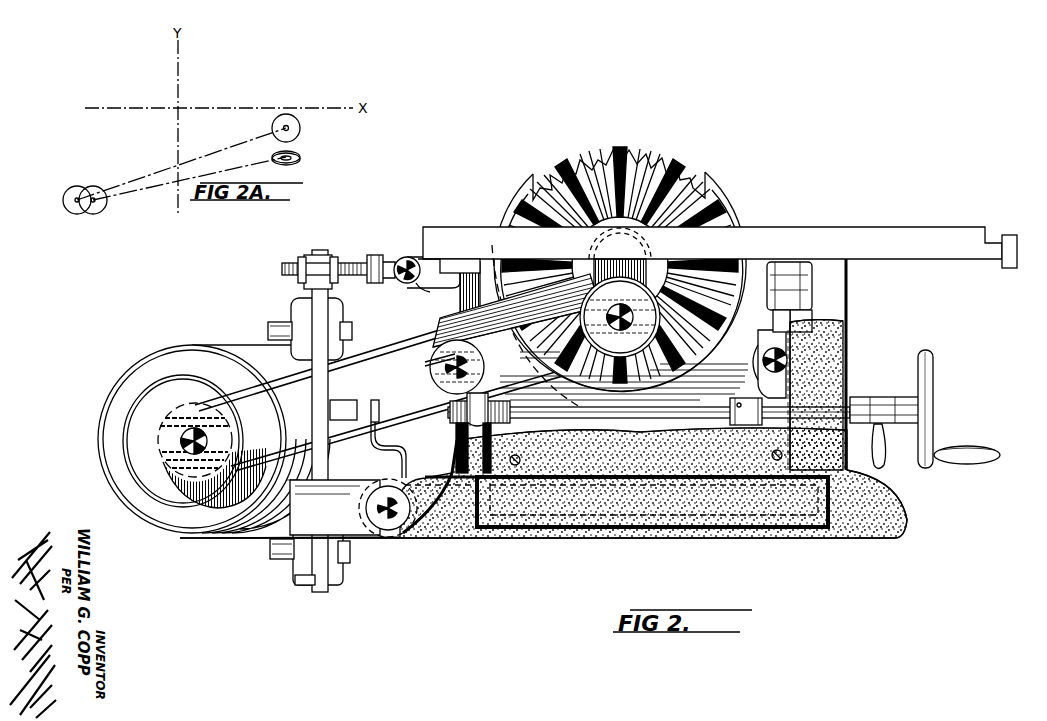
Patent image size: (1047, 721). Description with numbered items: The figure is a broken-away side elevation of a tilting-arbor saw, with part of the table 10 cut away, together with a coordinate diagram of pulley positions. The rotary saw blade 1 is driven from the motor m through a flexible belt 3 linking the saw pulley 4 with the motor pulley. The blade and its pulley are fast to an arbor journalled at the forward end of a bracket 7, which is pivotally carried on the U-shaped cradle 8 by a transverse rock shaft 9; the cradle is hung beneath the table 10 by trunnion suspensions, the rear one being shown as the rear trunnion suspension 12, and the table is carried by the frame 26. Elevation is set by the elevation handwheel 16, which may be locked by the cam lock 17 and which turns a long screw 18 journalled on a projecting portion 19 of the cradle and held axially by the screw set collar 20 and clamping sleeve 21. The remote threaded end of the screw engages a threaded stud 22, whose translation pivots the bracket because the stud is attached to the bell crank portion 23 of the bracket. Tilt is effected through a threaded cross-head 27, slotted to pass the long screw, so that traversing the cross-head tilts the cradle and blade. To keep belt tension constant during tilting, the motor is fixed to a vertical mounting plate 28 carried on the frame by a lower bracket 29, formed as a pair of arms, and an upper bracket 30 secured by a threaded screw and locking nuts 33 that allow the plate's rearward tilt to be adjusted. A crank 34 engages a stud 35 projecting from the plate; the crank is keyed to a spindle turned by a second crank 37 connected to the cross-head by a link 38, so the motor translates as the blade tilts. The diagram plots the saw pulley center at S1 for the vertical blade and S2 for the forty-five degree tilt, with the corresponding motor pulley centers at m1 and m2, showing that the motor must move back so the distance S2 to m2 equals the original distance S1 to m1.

In FIG. 2, the rotary saw blade 1 is at (632, 160).
In FIG. 2, the flexible belt 3 is at (310, 421).
In FIG. 2, the saw pulley 4 is at (624, 317).
In FIG. 2, the bracket 7 is at (560, 340).
In FIG. 2, the U-shaped cradle 8 is at (690, 385).
In FIG. 2, the transverse rock shaft 9 is at (442, 380).
In FIG. 2, the table 10 is at (905, 228).
In FIG. 2, the rear trunnion suspension 12 is at (473, 276).
In FIG. 2, the elevation handwheel 16 is at (936, 370).
In FIG. 2, the cam lock 17 is at (934, 460).
In FIG. 2, the long screw 18 is at (454, 413).
In FIG. 2, the projecting portion 19 is at (752, 411).
In FIG. 2, the screw set collar 20 is at (730, 420).
In FIG. 2, the clamping sleeve 21 is at (872, 432).
In FIG. 2, the threaded stud 22 is at (456, 440).
In FIG. 2, the bell crank portion 23 is at (430, 384).
In FIG. 2, the frame 26 is at (848, 360).
In FIG. 2, the threaded cross-head 27 is at (757, 370).
In FIG. 2, the vertical mounting plate 28 is at (330, 581).
In FIG. 2, the lower bracket 29 is at (353, 508).
In FIG. 2, the upper bracket 30 is at (401, 257).
In FIG. 2, the threaded screw and locking nuts 33 is at (332, 262).
In FIG. 2, the crank 34 is at (384, 460).
In FIG. 2, the stud 35 is at (373, 400).
In FIG. 2, the second crank 37 is at (812, 312).
In FIG. 2, the link 38 is at (790, 336).
In FIG. 2, the motor m is at (184, 436).
In FIG. 2A, the saw pulley center position (vertical) S1 is at (294, 128).
In FIG. 2A, the saw pulley center position (tilted) S2 is at (294, 162).
In FIG. 2A, the motor pulley center position (vertical) m1 is at (100, 213).
In FIG. 2A, the motor pulley center position (tilted) m2 is at (76, 214).